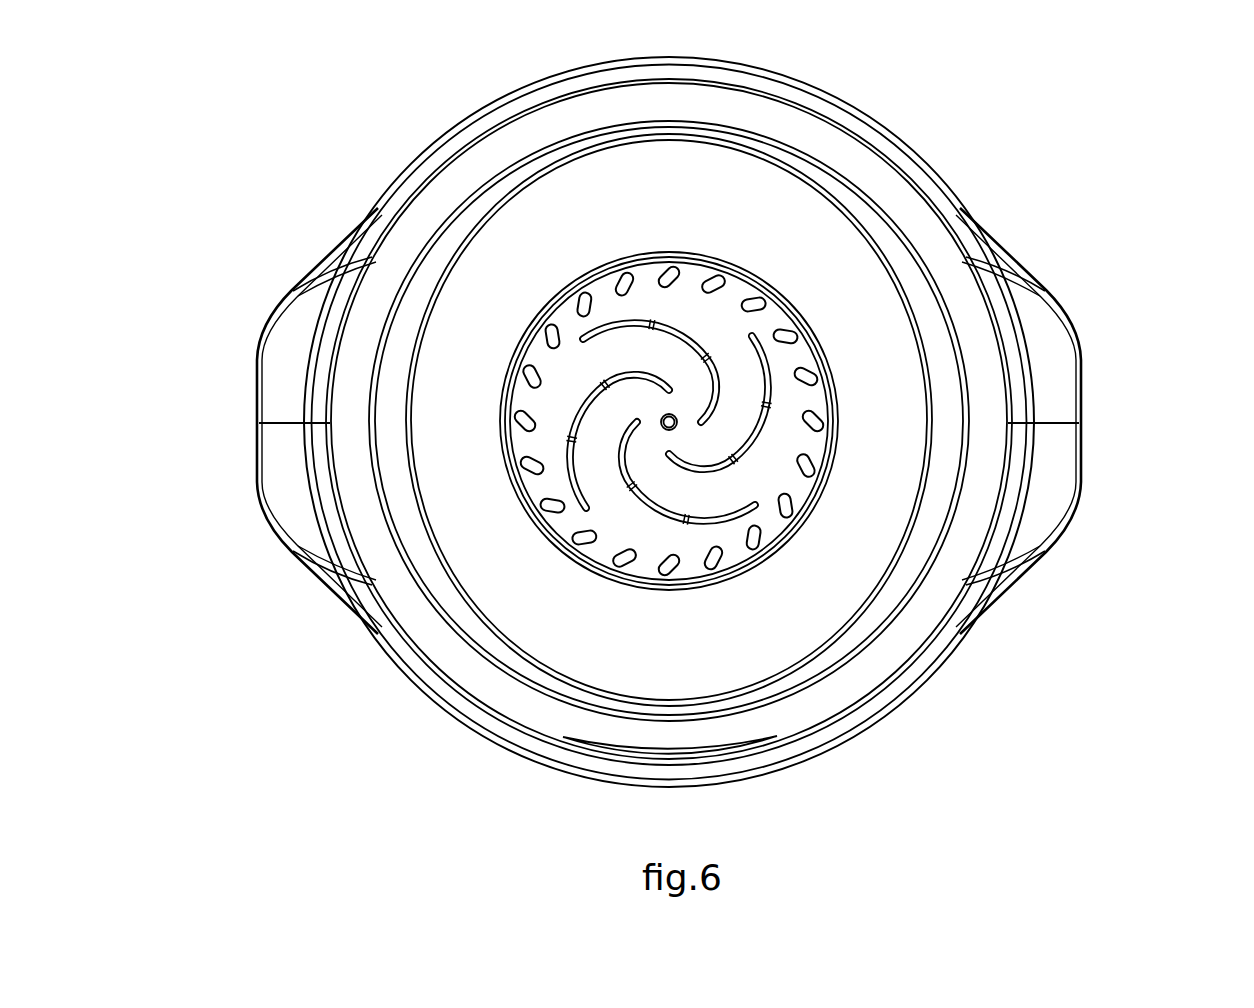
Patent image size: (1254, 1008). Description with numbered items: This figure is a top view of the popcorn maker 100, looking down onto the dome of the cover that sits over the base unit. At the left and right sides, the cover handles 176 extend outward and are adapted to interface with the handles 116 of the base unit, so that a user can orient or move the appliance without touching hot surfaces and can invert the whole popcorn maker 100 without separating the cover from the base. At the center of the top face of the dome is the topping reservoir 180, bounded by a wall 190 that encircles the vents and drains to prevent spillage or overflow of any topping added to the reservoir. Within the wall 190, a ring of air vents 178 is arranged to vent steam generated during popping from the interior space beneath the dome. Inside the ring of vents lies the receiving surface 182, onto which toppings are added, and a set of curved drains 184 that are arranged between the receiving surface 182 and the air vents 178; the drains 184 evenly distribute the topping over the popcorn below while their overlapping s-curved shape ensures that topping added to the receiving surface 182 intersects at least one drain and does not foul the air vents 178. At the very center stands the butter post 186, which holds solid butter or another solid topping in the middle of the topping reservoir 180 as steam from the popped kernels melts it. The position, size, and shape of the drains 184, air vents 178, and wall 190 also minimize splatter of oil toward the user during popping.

The popcorn maker 100 is at (362, 160).
The handles 116 is at (325, 592).
The cover handles 176 is at (1012, 271).
The air vents 178 is at (563, 535).
The topping reservoir 180 is at (640, 315).
The receiving surface 182 is at (685, 372).
The drains 184 is at (578, 448).
The butter post 186 is at (678, 417).
The wall 190 is at (742, 268).